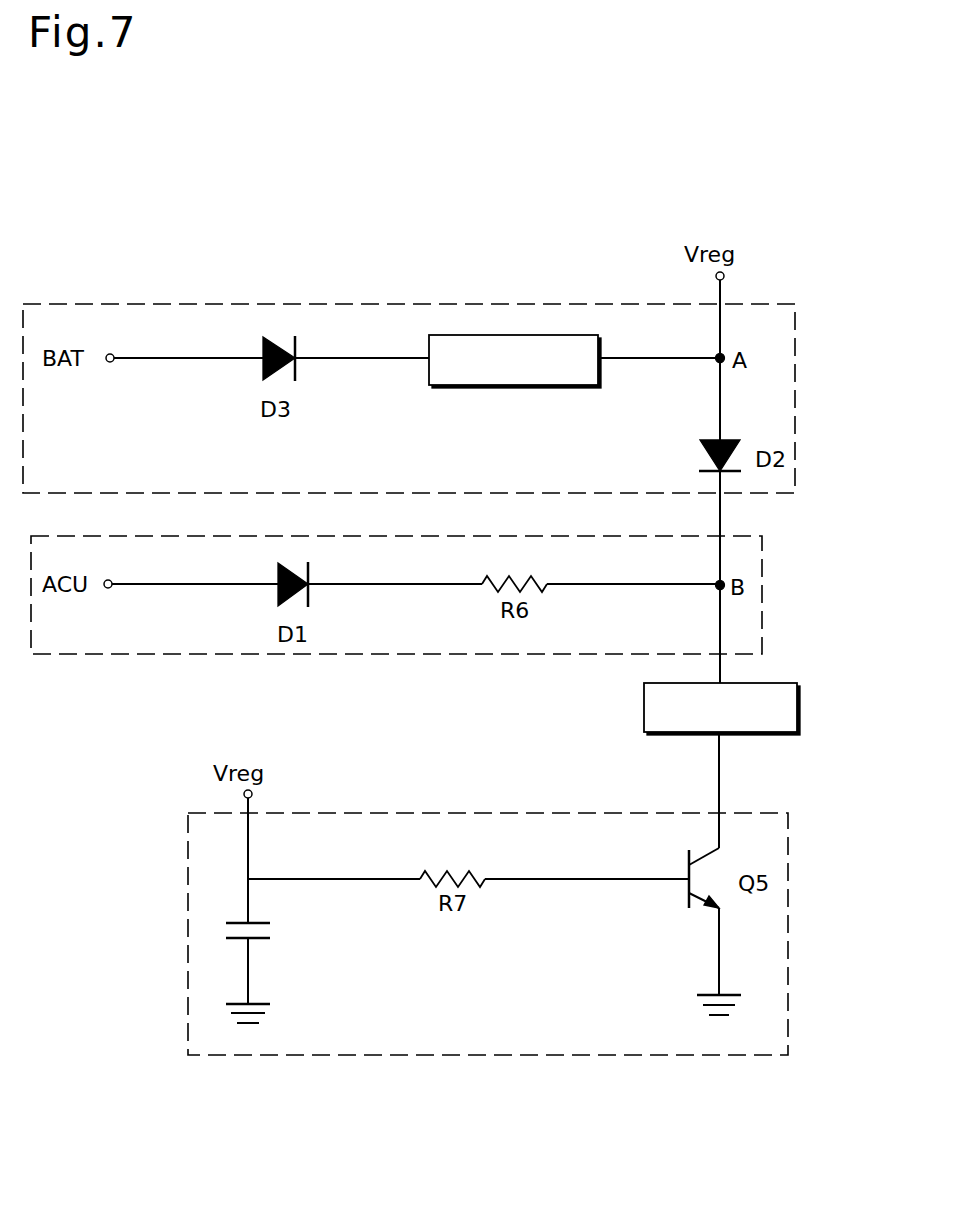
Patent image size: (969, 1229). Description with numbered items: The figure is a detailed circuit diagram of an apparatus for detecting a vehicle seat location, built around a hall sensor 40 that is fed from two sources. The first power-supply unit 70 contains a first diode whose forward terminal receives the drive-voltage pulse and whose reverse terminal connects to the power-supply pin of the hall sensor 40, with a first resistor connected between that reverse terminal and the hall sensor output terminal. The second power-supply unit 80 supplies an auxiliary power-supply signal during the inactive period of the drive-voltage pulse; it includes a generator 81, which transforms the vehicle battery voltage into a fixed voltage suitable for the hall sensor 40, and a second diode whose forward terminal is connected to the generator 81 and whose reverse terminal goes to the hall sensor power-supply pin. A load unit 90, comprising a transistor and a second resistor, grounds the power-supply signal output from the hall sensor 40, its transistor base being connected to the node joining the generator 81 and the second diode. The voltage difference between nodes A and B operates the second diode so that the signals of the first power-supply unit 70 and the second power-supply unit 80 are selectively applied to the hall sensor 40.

The second power-supply unit 80 is at (790, 383).
The generator 81 is at (582, 387).
The first power-supply unit 70 is at (757, 633).
The hall sensor 40 is at (797, 713).
The load unit 90 is at (780, 1030).